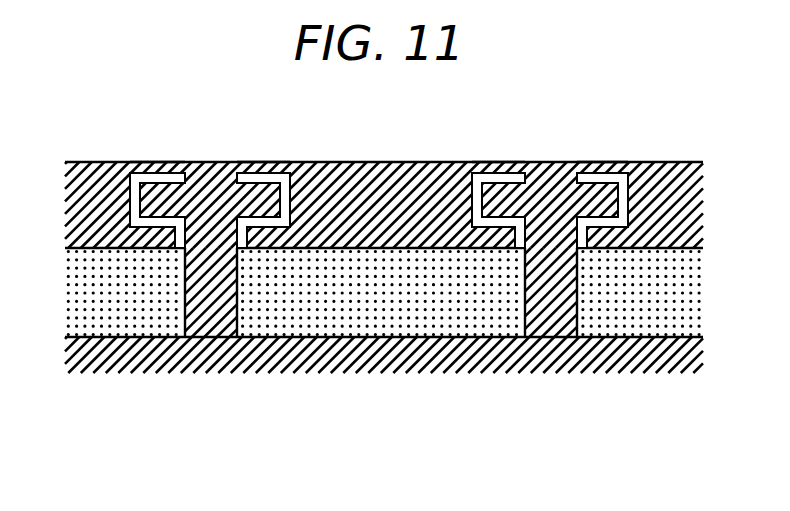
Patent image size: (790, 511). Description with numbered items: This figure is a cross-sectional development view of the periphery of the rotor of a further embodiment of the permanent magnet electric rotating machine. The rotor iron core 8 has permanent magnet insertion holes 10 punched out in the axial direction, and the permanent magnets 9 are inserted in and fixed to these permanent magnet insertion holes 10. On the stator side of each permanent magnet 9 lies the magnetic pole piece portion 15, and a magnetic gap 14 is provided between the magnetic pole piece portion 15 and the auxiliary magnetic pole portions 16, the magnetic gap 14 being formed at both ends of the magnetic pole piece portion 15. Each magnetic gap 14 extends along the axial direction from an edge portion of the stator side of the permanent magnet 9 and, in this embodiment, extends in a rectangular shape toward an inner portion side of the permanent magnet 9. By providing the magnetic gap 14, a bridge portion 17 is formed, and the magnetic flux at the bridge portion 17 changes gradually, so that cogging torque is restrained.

The rotor iron core 8 is at (384, 262).
The permanent magnet 9 is at (397, 338).
The permanent magnet insertion hole 10 is at (313, 345).
The magnetic gap 14 is at (185, 172).
The magnetic pole piece portion 15 is at (93, 163).
The auxiliary magnetic pole portion 16 is at (212, 195).
The bridge portion 17 is at (152, 163).